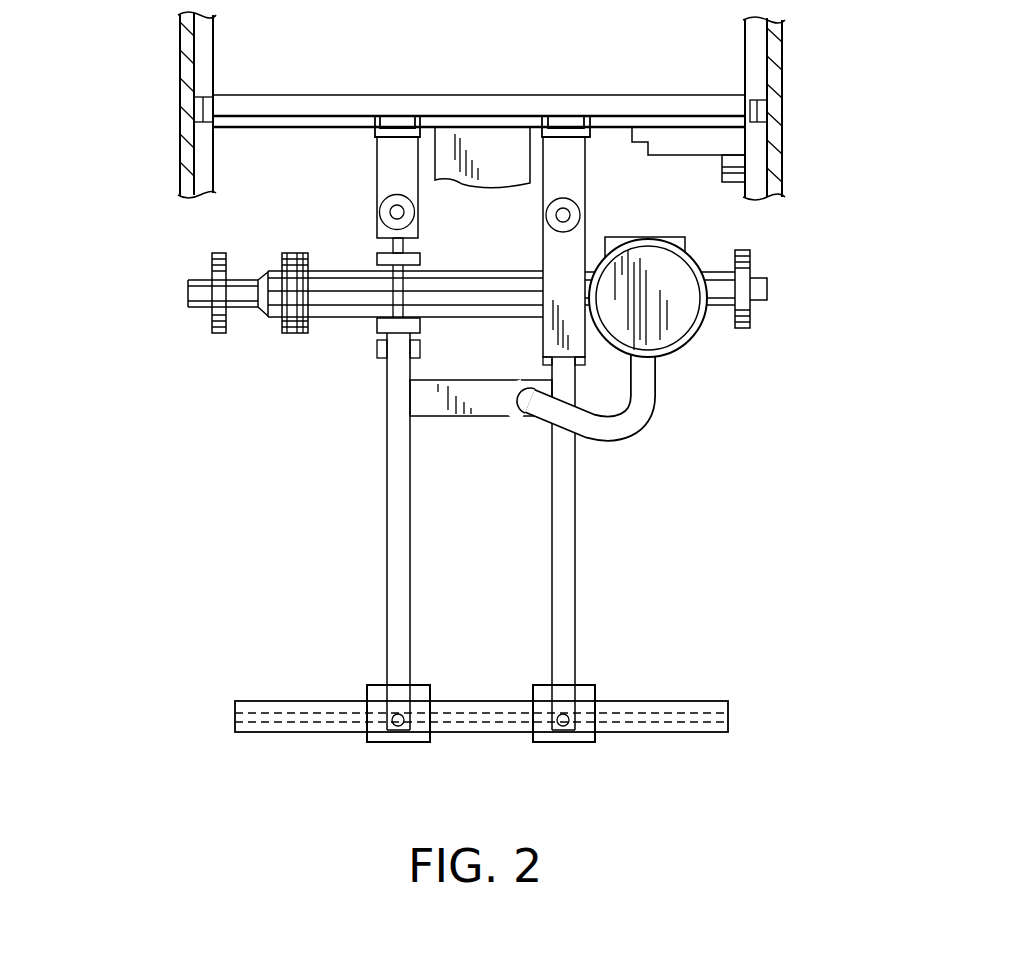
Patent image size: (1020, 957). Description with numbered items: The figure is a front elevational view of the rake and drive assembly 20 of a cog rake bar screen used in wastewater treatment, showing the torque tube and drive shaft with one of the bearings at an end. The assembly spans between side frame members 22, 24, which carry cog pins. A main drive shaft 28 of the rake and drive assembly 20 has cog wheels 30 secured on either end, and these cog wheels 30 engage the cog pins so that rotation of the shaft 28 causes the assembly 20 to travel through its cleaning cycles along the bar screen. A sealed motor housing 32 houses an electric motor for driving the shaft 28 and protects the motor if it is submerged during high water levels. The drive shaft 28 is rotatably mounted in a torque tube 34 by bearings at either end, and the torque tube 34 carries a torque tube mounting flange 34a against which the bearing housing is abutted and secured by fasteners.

The rake and drive assembly 20 is at (722, 467).
The side frame member 22 is at (182, 48).
The side frame member 24 is at (783, 53).
The main drive shaft 28 is at (238, 310).
The cog wheel 30 is at (212, 262).
The sealed motor housing 32 is at (688, 353).
The torque tube 34 is at (453, 270).
The torque tube mounting flange 34a is at (302, 338).